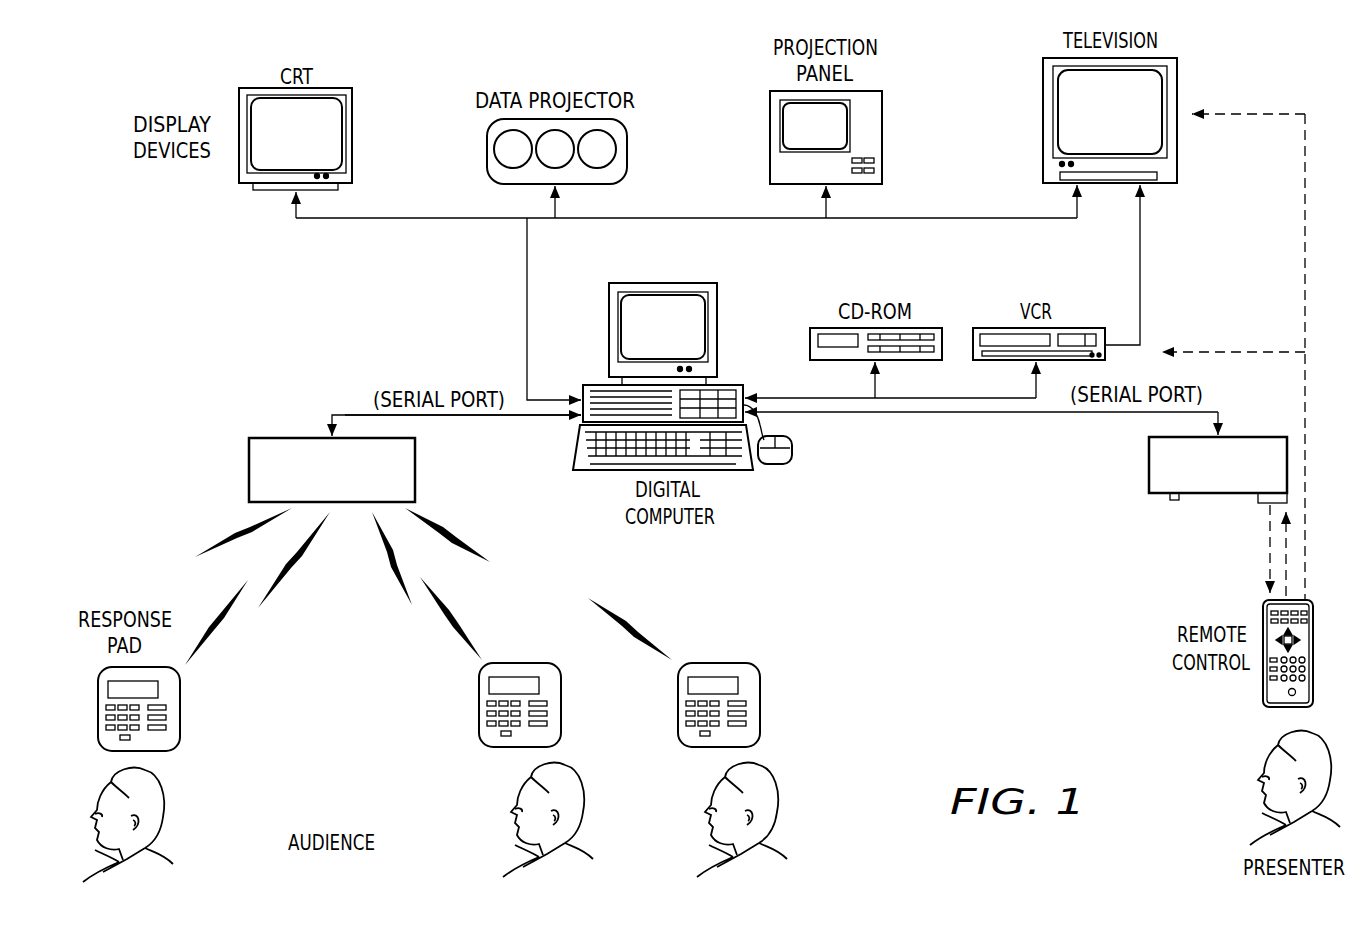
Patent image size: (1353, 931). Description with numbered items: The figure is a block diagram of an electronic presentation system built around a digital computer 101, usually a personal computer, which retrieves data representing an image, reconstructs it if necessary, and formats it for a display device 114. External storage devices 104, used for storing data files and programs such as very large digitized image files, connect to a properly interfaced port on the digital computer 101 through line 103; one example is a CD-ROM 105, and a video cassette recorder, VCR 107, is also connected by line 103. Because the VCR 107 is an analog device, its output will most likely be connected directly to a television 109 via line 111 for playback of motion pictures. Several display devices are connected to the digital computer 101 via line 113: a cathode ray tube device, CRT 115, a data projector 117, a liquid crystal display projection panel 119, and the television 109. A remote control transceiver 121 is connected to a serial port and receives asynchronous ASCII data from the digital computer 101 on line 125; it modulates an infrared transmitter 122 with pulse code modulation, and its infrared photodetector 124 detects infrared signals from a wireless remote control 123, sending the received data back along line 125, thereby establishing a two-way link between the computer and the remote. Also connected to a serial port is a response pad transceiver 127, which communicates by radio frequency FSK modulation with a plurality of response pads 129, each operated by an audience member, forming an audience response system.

The digital computer 101 is at (580, 484).
The line 103 is at (792, 398).
The external storage devices 104 is at (800, 292).
The compact disk-read-only-memory (CD-ROM) 105 is at (926, 324).
The video cassette recorder (VCR) 107 is at (1080, 328).
The television 109 is at (1178, 91).
The line 111 is at (1141, 246).
The line 113 is at (527, 308).
The display device 114 is at (214, 180).
The cathode ray tube (CRT) device 115 is at (353, 124).
The data projector 117 is at (488, 151).
The liquid crystal display (LCD) projection panel 119 is at (770, 138).
The remote control transceiver 121 is at (1147, 465).
The infrared transmitter 122 is at (1172, 501).
The wireless remote control 123 is at (1263, 689).
The infrared photodetector 124 is at (1262, 504).
The line 125 is at (855, 413).
The response pad transceiver 127 is at (249, 463).
The response pads 129 is at (181, 710).